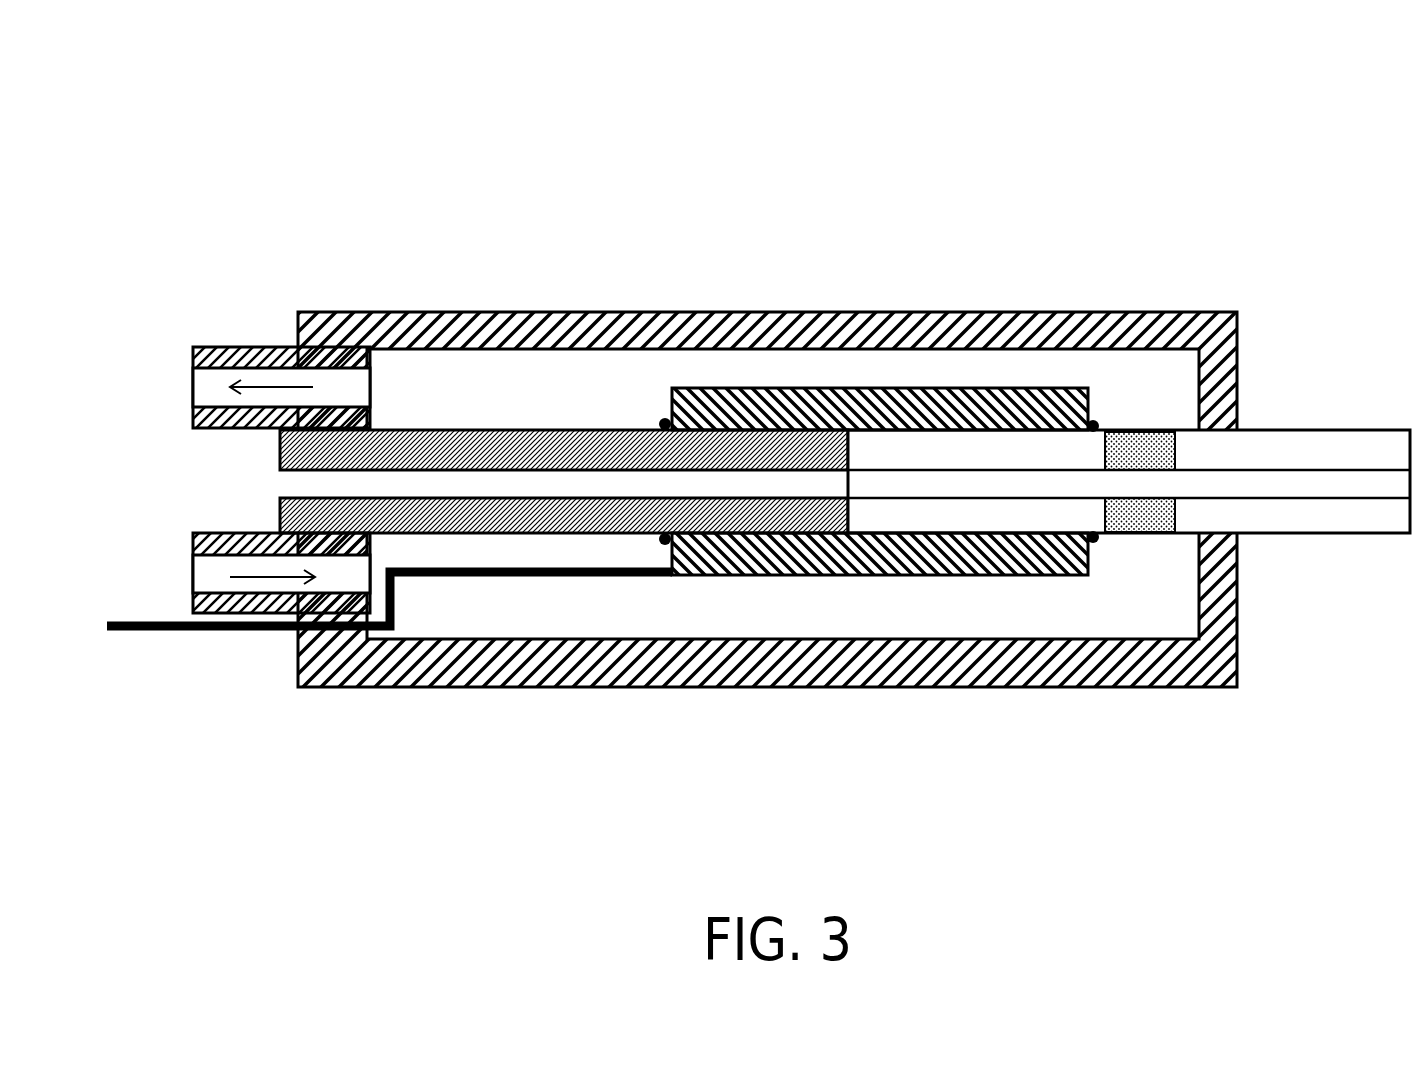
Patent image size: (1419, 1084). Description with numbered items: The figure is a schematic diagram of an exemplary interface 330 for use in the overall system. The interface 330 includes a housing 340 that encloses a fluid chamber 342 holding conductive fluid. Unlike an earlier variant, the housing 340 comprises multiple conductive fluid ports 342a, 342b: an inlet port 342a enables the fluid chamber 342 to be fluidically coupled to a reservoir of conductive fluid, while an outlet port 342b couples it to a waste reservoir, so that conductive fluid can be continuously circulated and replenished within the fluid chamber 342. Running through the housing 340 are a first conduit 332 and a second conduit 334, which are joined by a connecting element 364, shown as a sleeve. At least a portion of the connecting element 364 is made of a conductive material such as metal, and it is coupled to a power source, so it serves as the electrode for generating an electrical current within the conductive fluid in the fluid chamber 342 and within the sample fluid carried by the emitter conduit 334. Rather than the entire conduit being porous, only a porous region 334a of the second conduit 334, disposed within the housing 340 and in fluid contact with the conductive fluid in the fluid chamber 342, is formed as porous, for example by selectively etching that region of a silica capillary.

The interface 330 is at (400, 139).
The first conduit 332 is at (547, 430).
The second conduit 334 is at (1255, 535).
The porous region 334a is at (1135, 430).
The housing 340 is at (835, 312).
The fluid chamber 342 is at (444, 406).
The inlet port 342a is at (192, 575).
The outlet port 342b is at (192, 360).
The connecting element 364 is at (720, 577).